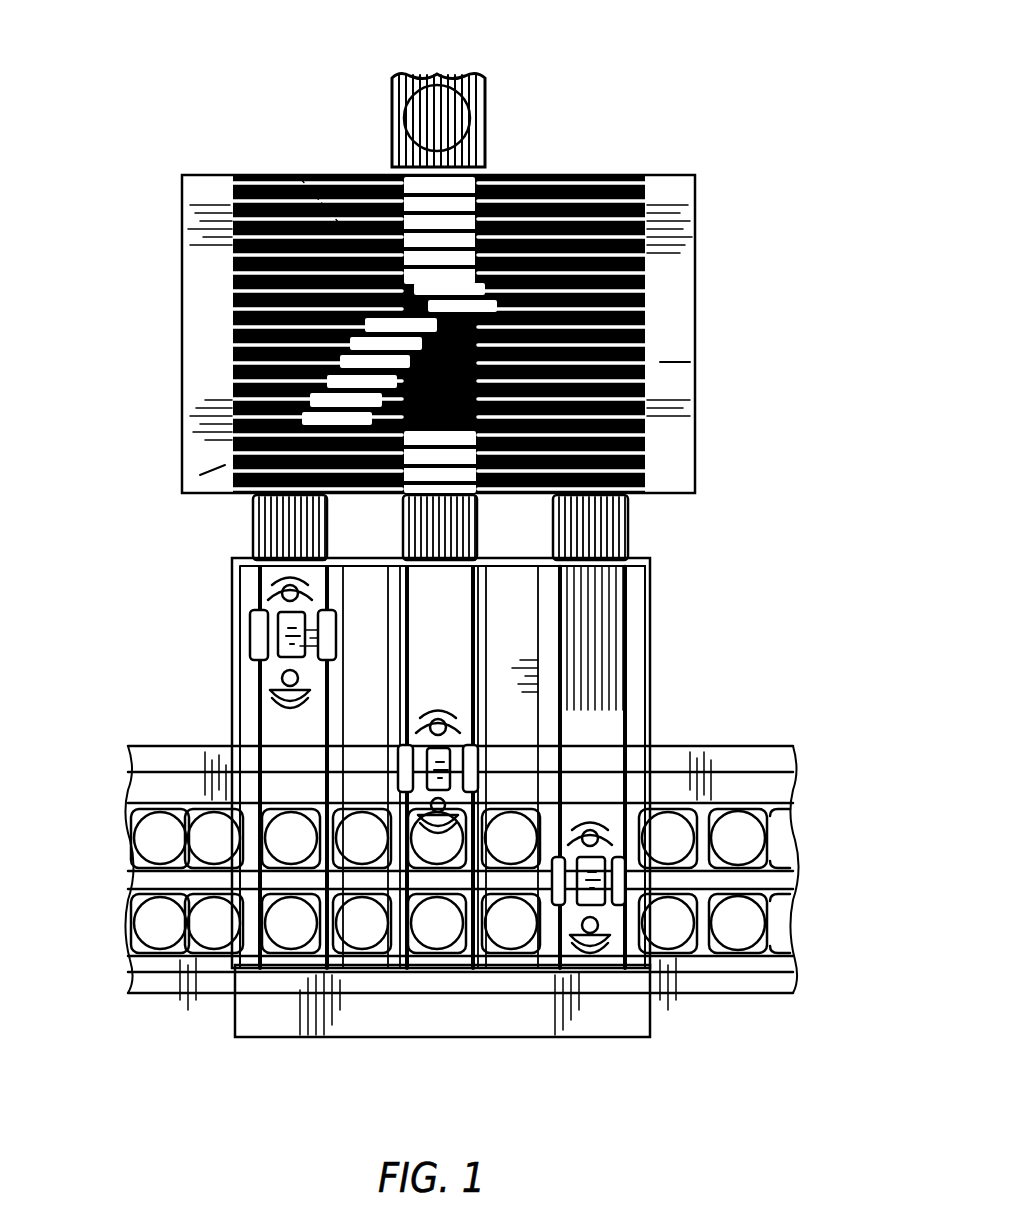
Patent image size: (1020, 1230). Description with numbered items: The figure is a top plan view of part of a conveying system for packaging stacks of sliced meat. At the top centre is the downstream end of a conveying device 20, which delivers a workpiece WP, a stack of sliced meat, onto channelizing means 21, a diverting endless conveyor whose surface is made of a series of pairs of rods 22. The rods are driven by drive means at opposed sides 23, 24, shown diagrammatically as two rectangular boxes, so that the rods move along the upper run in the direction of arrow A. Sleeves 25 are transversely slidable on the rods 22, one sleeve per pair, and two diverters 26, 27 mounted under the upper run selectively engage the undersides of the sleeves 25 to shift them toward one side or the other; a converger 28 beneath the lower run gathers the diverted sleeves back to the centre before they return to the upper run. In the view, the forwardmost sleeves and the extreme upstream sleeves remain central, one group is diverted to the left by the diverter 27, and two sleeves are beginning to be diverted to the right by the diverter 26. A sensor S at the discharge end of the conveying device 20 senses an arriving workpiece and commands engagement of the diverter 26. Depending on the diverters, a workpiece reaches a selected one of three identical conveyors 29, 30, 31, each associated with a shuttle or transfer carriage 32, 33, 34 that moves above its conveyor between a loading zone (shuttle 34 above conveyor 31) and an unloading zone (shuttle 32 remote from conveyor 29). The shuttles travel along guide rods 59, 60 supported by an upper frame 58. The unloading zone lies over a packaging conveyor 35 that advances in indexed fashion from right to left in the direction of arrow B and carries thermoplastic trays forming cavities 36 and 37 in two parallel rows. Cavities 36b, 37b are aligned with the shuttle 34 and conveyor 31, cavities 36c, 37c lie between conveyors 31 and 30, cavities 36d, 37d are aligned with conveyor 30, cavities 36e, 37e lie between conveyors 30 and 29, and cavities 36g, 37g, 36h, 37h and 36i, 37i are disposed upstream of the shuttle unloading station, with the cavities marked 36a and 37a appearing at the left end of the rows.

The conveying device 20 is at (488, 108).
The channelizing means 21 is at (434, 324).
The pairs of rods 22 is at (566, 180).
The side 23 is at (666, 185).
The side 24 is at (215, 180).
The sleeves 25 is at (385, 175).
The diverter 26 is at (700, 362).
The diverter 27 is at (195, 478).
The converger 28 is at (300, 175).
The conveyor 29 is at (634, 530).
The conveyor 30 is at (500, 522).
The conveyor 31 is at (252, 540).
The shuttle 32 is at (620, 800).
The shuttle 33 is at (398, 740).
The shuttle 34 is at (272, 660).
The packaging conveyor 35 is at (775, 778).
The cavities 36 is at (162, 830).
The cell 36a is at (236, 851).
The cavity 36b is at (313, 851).
The intermediate cavity 36c is at (384, 851).
The cavity 36d is at (459, 851).
The intermediate cavity 36e is at (533, 851).
The cavity 36g is at (668, 830).
The cavity 36h is at (742, 835).
The cavity 36i is at (782, 850).
The cavities 37 is at (165, 922).
The cell 37a is at (236, 936).
The cavity 37b is at (313, 936).
The intermediate cavity 37c is at (384, 936).
The cavity 37d is at (459, 936).
The intermediate cavity 37e is at (533, 936).
The cavity 37g is at (680, 950).
The cavity 37h is at (742, 935).
The cavity 37i is at (785, 927).
The upper frame 58 is at (650, 608).
The guide rod 59 is at (562, 730).
The guide rod 60 is at (628, 672).
The sensor S is at (382, 152).
The workpiece WP is at (443, 80).
The arrow A is at (205, 332).
The arrow B is at (425, 1000).